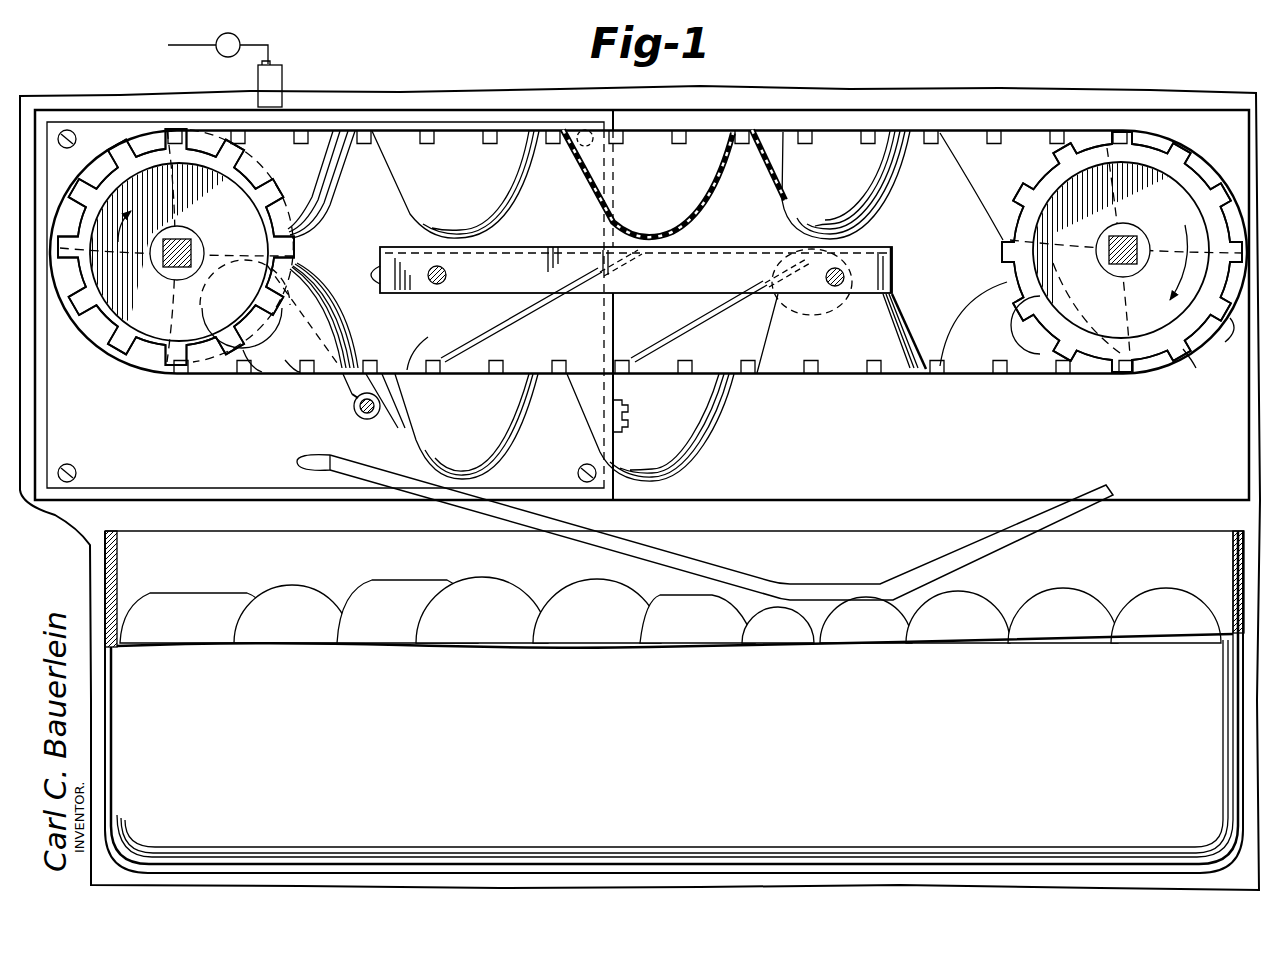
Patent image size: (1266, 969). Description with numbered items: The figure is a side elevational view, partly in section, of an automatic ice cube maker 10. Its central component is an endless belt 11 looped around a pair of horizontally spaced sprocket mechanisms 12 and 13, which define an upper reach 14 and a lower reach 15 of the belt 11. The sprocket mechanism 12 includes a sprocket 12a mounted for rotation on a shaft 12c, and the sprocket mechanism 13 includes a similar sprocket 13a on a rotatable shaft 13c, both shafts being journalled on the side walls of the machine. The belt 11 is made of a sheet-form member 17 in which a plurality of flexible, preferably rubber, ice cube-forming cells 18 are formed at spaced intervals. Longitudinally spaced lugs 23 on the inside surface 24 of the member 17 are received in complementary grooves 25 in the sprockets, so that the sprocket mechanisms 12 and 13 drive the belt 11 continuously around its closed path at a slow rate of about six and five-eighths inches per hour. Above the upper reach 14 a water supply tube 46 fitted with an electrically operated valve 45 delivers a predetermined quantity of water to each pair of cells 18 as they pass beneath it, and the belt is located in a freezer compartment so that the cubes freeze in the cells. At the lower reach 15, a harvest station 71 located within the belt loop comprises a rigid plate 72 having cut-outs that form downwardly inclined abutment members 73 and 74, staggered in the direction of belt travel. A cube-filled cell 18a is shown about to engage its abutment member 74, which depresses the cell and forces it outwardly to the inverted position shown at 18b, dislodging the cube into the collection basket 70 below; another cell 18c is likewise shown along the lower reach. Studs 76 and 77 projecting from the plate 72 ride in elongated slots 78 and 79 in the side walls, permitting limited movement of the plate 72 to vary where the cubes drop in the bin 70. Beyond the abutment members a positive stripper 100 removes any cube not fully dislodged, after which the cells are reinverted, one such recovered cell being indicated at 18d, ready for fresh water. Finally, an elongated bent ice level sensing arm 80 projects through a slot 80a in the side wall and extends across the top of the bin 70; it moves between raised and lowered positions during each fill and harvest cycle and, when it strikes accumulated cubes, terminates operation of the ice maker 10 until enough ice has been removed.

The automatic ice cube maker 10 is at (1010, 84).
The endless belt 11 is at (1030, 128).
The sprocket mechanism 12 is at (153, 350).
The sprocket 12a is at (96, 320).
The shaft 12c is at (172, 264).
The sprocket mechanism 13 is at (1158, 354).
The sprocket 13a is at (1186, 172).
The rotatable shaft 13c is at (1132, 242).
The upper reach 14 is at (838, 129).
The lower reach 15 is at (947, 377).
The sheet-form member 17 is at (746, 129).
The ice cube-forming cells 18 is at (412, 193).
The cube-filled cell 18a is at (900, 322).
The inverted cell 18b is at (712, 434).
The bucket 18c is at (515, 455).
The reinverted cell 18d is at (347, 348).
The lugs 23 is at (295, 372).
The inside surface 24 is at (426, 339).
The grooves 25 is at (222, 320).
The electrically operated valve 45 is at (242, 39).
The water supply tube 46 is at (283, 76).
The collection basket 70 is at (1222, 545).
The harvest station 71 is at (898, 268).
The rigid plate 72 is at (700, 246).
The abutment member 73 is at (520, 320).
The abutment member 74 is at (705, 300).
The stud 76 is at (447, 275).
The stud 77 is at (850, 266).
The elongated slot 78 is at (378, 273).
The elongated slot 79 is at (824, 305).
The ice level sensing arm 80 is at (939, 567).
The slot 80a is at (298, 462).
The positive stripper 100 is at (360, 416).